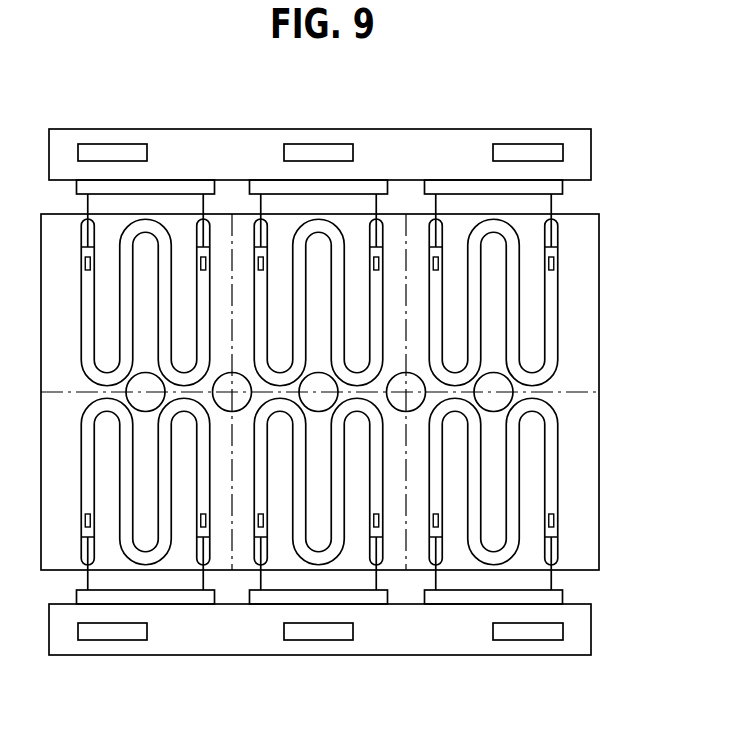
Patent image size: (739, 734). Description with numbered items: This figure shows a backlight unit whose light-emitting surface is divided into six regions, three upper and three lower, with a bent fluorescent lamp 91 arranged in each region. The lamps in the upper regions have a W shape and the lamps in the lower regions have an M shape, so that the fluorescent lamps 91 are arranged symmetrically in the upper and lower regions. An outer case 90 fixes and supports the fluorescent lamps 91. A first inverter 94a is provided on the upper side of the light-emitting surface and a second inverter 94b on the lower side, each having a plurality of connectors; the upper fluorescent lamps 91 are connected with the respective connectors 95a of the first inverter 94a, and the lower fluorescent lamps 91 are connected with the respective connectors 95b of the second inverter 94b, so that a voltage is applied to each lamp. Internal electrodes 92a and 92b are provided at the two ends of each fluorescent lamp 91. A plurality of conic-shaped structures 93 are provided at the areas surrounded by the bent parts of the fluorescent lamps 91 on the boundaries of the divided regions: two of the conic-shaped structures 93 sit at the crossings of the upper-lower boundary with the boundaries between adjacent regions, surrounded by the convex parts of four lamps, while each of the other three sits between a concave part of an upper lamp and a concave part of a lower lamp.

The outer case 90 is at (585, 423).
The fluorescent lamp 91 is at (553, 338).
The internal electrode 92a is at (556, 262).
The internal electrode 92b is at (441, 264).
The conic-shaped structure 93 is at (503, 384).
The first inverter 94a is at (382, 140).
The second inverter 94b is at (382, 644).
The connector 95a is at (264, 185).
The connector 95b is at (264, 600).